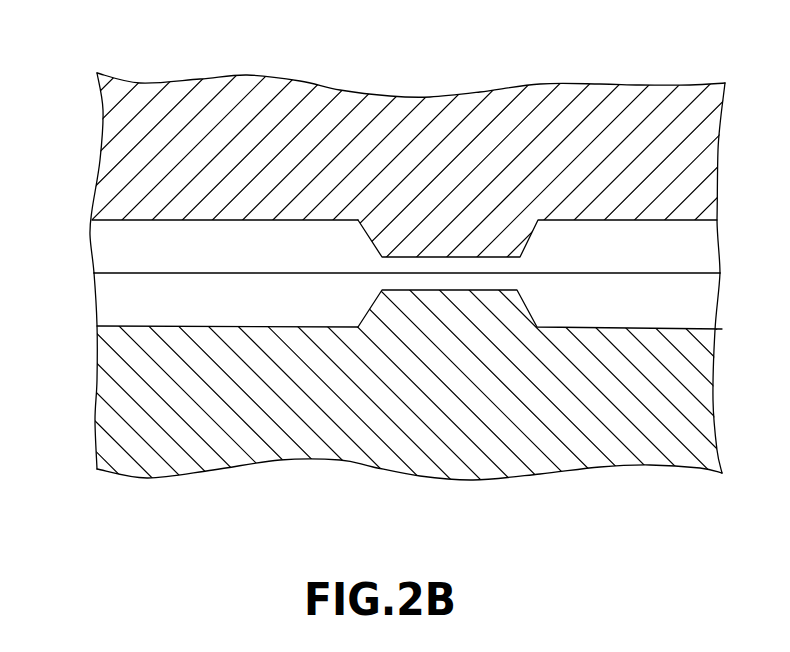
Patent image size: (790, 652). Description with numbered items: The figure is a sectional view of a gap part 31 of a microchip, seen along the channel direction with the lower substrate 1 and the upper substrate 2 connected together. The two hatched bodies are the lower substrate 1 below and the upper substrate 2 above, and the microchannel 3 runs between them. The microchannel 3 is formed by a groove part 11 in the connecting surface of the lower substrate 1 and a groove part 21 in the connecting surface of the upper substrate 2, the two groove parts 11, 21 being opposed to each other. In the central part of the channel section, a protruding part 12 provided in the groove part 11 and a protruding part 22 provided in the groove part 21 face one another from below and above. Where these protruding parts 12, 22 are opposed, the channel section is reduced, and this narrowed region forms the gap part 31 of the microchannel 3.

The lower substrate 1 is at (108, 403).
The upper substrate 2 is at (110, 151).
The microchannel 3 is at (198, 265).
The groove part 11 is at (218, 290).
The protruding part 12 is at (428, 297).
The groove part 21 is at (213, 240).
The protruding part 22 is at (405, 235).
The gap part 31 is at (485, 267).